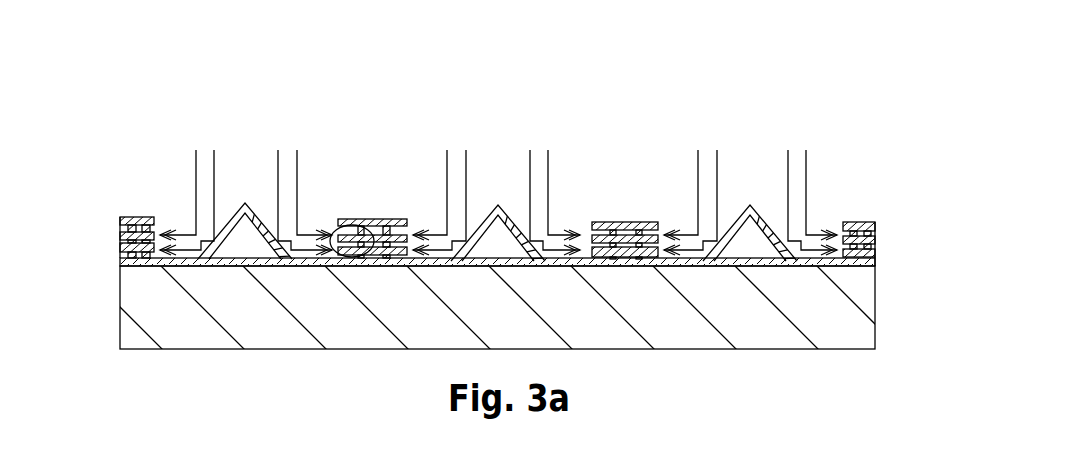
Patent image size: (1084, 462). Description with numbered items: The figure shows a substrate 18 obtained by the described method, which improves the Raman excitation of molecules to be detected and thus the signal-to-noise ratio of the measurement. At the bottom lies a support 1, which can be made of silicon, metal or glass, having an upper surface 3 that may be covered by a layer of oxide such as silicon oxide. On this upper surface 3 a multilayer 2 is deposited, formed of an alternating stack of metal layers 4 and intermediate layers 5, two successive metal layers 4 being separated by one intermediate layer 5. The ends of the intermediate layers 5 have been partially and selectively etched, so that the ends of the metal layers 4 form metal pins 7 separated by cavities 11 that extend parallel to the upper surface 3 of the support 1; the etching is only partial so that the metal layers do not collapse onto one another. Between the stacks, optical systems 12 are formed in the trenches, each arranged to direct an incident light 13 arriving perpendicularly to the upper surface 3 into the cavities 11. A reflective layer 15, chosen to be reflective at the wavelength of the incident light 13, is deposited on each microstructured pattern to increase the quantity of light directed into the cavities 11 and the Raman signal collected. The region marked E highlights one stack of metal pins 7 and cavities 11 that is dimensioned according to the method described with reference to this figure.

The support 1 is at (845, 322).
The multilayer 2 is at (115, 217).
The upper surface 3 is at (148, 262).
The metal layer 4 is at (880, 219).
The intermediate layer 5 is at (877, 235).
The metal pin 7 is at (634, 215).
The cavity 11 is at (650, 222).
The optical system 12 is at (755, 218).
The incident light 13 is at (698, 173).
The reflective layer 15 is at (231, 213).
The substrate 18 is at (866, 136).
The region E is at (318, 228).